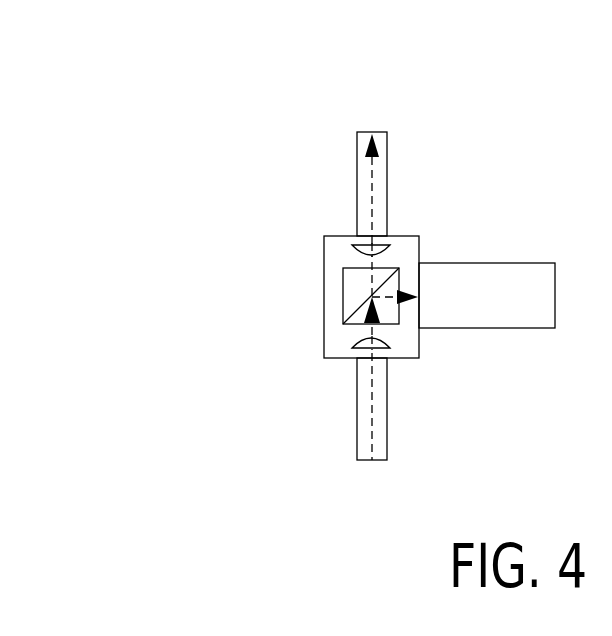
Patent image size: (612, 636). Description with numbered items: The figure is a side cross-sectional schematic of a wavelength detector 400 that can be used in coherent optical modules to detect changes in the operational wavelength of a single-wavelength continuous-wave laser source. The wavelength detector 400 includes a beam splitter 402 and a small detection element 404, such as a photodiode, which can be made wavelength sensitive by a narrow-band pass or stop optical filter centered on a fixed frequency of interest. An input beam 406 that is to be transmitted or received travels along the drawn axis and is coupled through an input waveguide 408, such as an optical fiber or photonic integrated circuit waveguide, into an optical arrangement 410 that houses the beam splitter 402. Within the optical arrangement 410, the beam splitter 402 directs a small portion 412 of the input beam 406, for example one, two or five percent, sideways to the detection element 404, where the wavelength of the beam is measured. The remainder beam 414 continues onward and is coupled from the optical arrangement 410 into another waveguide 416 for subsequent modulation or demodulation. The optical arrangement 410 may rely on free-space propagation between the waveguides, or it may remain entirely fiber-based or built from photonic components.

The wavelength detector 400 is at (172, 88).
The beam splitter 402 is at (399, 268).
The detection element 404 is at (503, 328).
The input beam 406 is at (373, 417).
The input waveguide 408 is at (370, 418).
The optical arrangement 410 is at (324, 287).
The portion of the beam 412 is at (380, 300).
The remainder beam 414 is at (372, 217).
The waveguide 416 is at (385, 160).